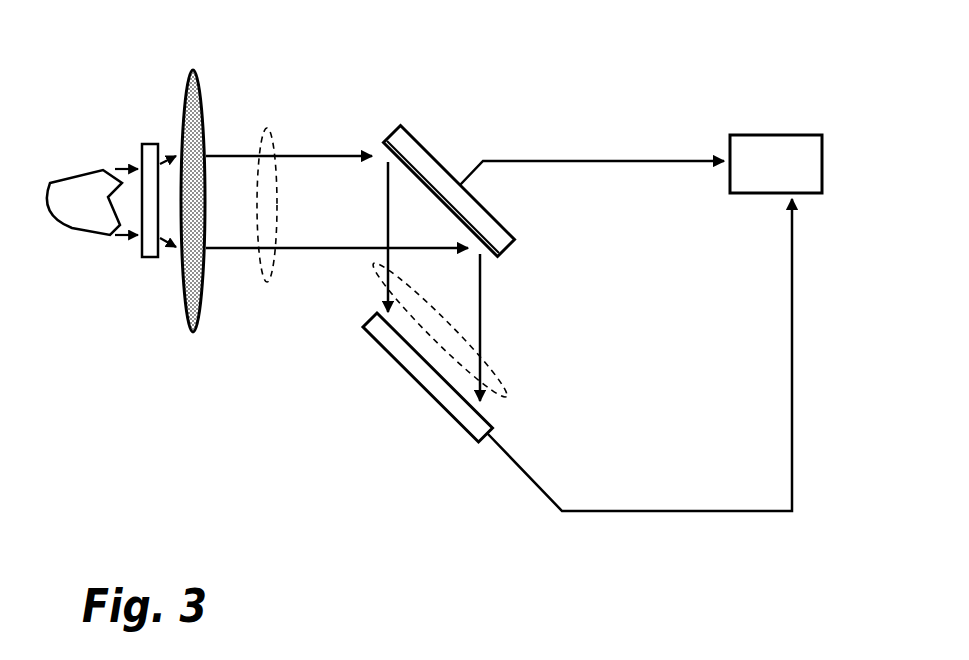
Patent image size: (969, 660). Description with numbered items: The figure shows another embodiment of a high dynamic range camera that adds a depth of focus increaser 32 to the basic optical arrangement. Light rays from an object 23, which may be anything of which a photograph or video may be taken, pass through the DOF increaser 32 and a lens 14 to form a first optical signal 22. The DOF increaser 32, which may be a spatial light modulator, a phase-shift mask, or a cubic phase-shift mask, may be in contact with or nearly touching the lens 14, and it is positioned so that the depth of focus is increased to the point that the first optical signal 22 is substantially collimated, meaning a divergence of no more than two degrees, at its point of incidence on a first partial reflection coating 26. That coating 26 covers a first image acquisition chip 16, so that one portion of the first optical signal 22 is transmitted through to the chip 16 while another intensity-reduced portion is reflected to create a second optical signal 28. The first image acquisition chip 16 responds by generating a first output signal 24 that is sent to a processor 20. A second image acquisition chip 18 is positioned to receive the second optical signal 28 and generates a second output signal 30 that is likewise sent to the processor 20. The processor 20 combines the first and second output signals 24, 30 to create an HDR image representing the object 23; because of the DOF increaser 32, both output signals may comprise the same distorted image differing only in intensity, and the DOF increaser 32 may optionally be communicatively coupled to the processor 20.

The lens 14 is at (192, 70).
The first image acquisition chip 16 is at (430, 152).
The second image acquisition chip 18 is at (433, 400).
The processor 20 is at (765, 135).
The first optical signal 22 is at (267, 282).
The object 23 is at (73, 230).
The first output signal 24 is at (595, 158).
The first partial reflection coating 26 is at (383, 143).
The second optical signal 28 is at (505, 392).
The second output signal 30 is at (737, 510).
The depth of focus increaser 32 is at (148, 143).